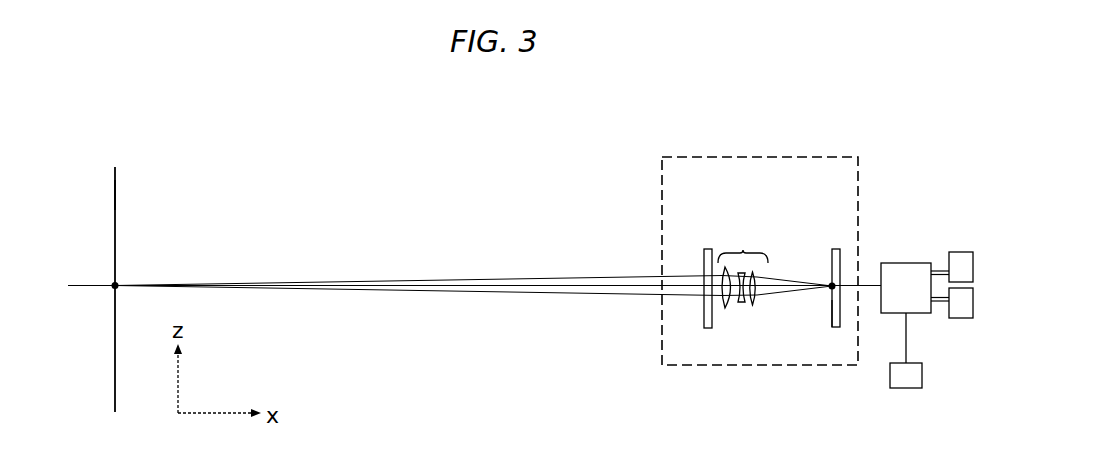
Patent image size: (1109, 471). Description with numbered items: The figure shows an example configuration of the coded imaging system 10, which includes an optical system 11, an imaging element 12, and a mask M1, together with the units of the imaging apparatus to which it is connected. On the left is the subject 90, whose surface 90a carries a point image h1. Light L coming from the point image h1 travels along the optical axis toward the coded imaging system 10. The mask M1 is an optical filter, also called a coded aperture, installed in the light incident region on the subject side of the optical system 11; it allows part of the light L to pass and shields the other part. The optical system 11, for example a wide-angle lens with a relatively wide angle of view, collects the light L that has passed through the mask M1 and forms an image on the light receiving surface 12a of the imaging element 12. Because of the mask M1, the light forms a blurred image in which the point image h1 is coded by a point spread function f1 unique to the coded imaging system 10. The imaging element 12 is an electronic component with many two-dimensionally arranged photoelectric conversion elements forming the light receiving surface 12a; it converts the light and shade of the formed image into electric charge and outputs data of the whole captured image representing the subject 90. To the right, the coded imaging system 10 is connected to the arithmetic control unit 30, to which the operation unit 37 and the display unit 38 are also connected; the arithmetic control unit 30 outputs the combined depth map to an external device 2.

The subject 90 is at (115, 150).
The surface 90a is at (118, 191).
The point image h1 is at (112, 282).
The light L is at (559, 277).
The coded imaging system 10 is at (802, 152).
The mask M1 is at (706, 247).
The optical system 11 is at (745, 248).
The point spread function f1 is at (790, 274).
The imaging element 12 is at (835, 247).
The light receiving surface 12a is at (832, 316).
The arithmetic control unit 30 is at (895, 262).
The operation unit 37 is at (965, 250).
The display unit 38 is at (965, 320).
The external device 2 is at (911, 390).